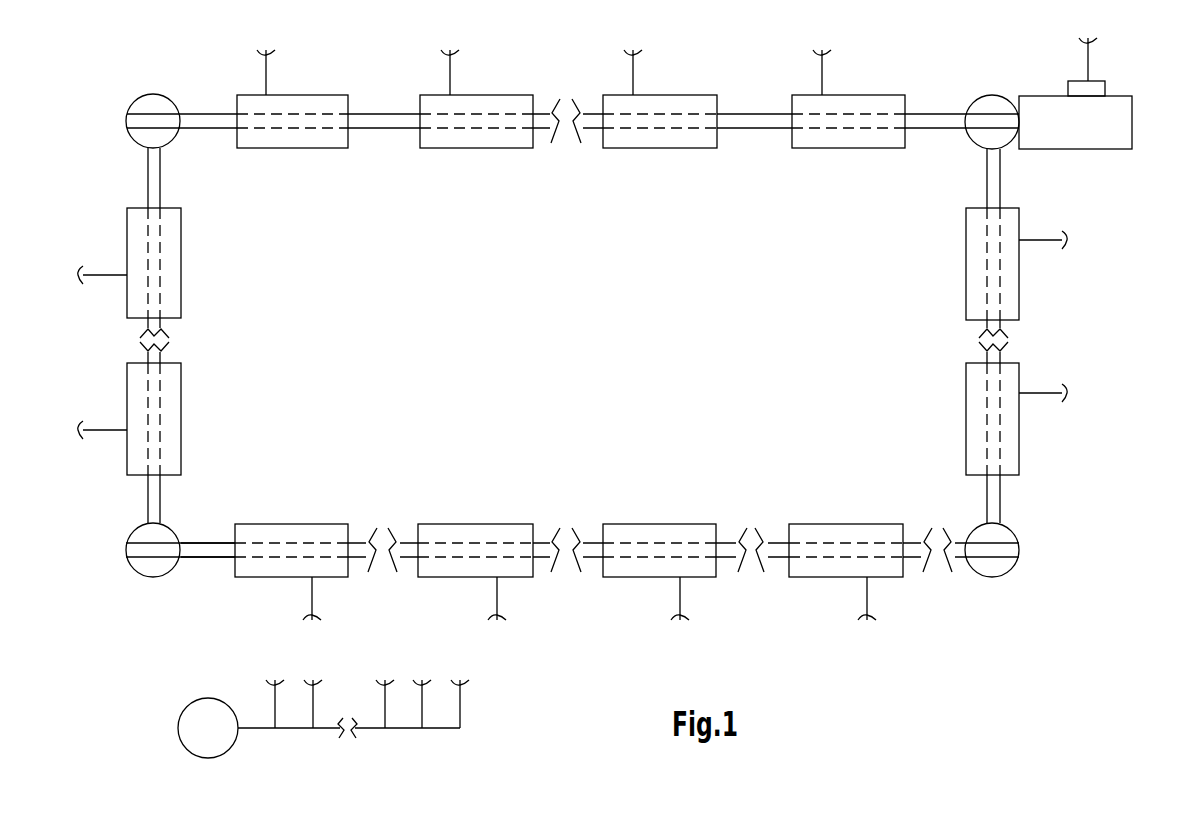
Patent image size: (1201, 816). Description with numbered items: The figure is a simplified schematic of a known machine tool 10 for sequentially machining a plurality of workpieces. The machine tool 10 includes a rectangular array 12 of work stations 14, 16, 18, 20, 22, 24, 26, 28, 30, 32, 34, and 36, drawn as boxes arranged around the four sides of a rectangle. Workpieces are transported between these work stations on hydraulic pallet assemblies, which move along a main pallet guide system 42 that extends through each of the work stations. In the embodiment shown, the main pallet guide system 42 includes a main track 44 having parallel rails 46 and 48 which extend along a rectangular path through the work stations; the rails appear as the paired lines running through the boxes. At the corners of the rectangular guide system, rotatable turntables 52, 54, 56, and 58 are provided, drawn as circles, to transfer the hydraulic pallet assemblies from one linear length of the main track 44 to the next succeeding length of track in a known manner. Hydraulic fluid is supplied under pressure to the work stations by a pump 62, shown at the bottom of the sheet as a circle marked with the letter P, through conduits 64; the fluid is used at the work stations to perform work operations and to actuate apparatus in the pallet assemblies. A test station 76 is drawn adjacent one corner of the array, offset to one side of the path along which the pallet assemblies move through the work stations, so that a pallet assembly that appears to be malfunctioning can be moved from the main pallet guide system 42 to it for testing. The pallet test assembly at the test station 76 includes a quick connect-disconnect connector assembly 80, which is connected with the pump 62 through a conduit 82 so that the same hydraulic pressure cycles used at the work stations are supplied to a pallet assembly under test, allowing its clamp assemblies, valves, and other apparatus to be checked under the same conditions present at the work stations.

The machine tool 10 is at (103, 86).
The rectangular array 12 is at (103, 201).
The work station 14 is at (257, 530).
The work station 16 is at (478, 528).
The work station 18 is at (655, 530).
The work station 20 is at (815, 532).
The work station 22 is at (978, 400).
The work station 24 is at (977, 267).
The work station 26 is at (842, 138).
The work station 28 is at (655, 138).
The work station 30 is at (470, 138).
The work station 32 is at (287, 137).
The work station 34 is at (176, 265).
The work station 36 is at (170, 412).
The main pallet guide system 42 is at (190, 568).
The main track 44 is at (218, 553).
The rail 46 is at (355, 560).
The rail 48 is at (362, 537).
The rotatable turntable 52 is at (138, 537).
The rotatable turntable 54 is at (988, 567).
The rotatable turntable 56 is at (993, 110).
The rotatable turntable 58 is at (152, 105).
The pump 62 is at (190, 733).
The conduit 64 is at (266, 73).
The test station 76 is at (1101, 158).
The quick connect-disconnect connector assembly 80 is at (1102, 88).
The conduit 82 is at (1088, 62).